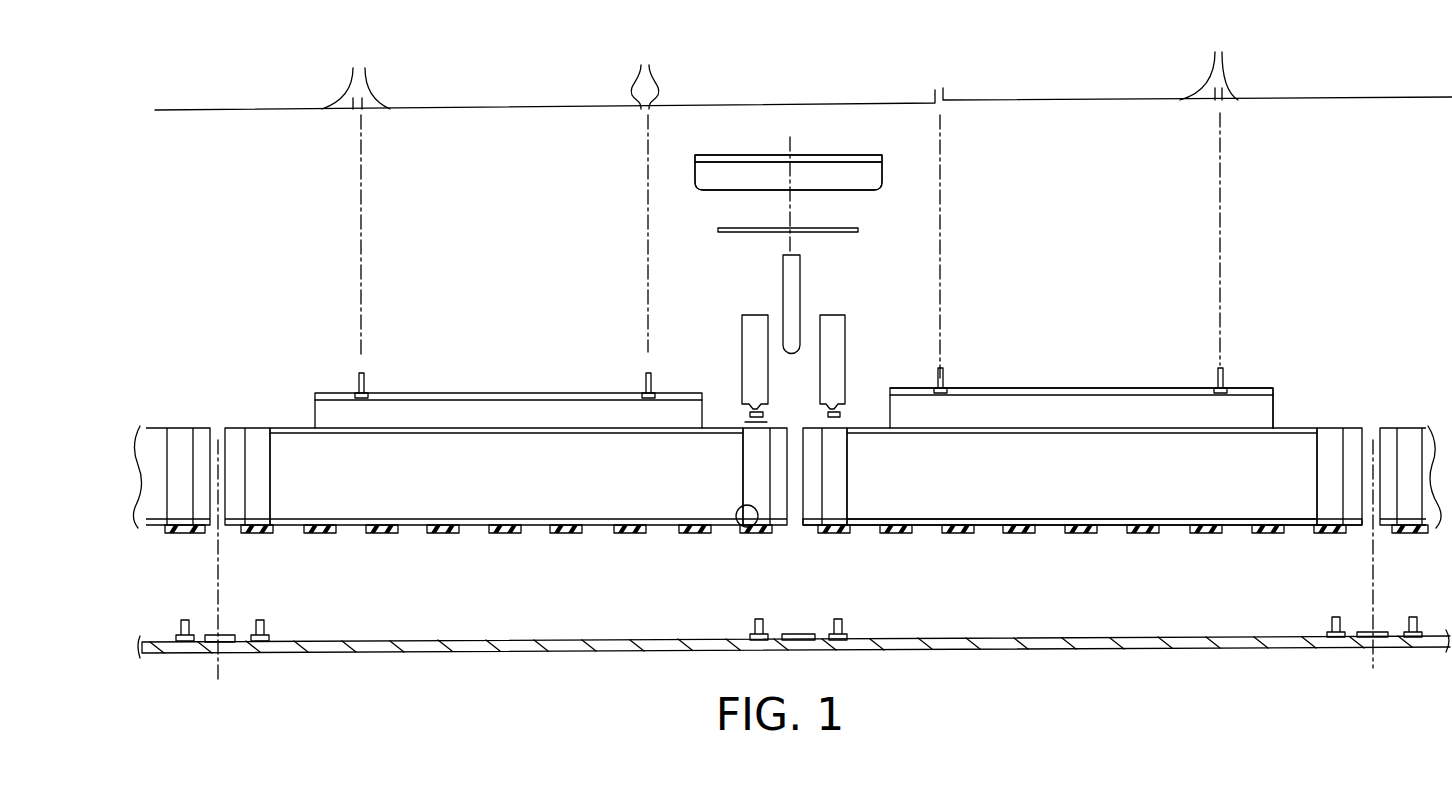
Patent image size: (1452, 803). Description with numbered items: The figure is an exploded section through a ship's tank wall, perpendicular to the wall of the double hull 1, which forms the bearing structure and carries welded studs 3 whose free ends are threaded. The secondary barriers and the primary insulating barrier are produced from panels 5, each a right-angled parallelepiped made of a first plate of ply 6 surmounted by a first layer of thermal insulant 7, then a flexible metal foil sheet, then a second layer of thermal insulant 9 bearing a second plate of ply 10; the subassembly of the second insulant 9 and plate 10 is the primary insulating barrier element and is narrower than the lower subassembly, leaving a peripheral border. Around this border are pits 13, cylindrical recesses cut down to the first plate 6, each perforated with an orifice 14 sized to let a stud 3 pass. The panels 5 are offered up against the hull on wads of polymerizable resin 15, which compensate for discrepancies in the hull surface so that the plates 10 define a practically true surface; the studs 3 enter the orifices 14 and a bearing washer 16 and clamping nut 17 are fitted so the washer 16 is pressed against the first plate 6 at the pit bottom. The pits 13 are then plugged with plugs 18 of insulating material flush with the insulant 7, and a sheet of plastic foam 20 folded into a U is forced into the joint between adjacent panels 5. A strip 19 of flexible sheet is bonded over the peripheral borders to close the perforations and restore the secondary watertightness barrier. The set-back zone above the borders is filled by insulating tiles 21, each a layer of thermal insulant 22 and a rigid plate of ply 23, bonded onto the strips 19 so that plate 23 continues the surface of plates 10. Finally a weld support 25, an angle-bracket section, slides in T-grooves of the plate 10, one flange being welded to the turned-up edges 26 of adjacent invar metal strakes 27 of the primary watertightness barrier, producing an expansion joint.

The wall of the double hull 1 is at (512, 652).
The studs 3 is at (183, 620).
The panel 5 is at (1283, 401).
The first plate of ply 6 is at (1107, 534).
The first layer of thermal insulant 7 is at (528, 497).
The second layer of thermal insulant 9 is at (433, 412).
The second plate of ply 10 is at (517, 396).
The pits 13 is at (262, 498).
The orifice 14 is at (742, 527).
The wads of polymerizable resin 15 is at (392, 534).
The bearing washer 16 is at (842, 418).
The clamping nut 17 is at (748, 418).
The plugs 18 is at (745, 318).
The strip 19 is at (735, 228).
The sheet of plastic foam 20 is at (803, 300).
The insulating tiles 21 is at (697, 187).
The layer of thermal insulant 22 is at (860, 180).
The rigid plate of ply 23 is at (852, 157).
The weld support 25 is at (358, 380).
The turned-up edges 26 is at (644, 72).
The metal strakes 27 is at (780, 64).